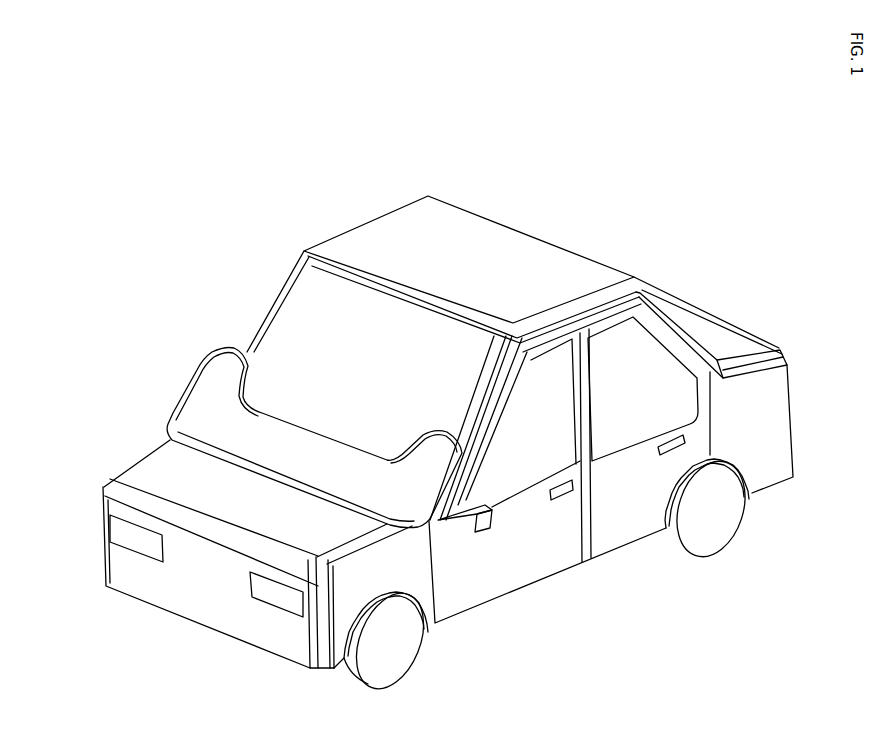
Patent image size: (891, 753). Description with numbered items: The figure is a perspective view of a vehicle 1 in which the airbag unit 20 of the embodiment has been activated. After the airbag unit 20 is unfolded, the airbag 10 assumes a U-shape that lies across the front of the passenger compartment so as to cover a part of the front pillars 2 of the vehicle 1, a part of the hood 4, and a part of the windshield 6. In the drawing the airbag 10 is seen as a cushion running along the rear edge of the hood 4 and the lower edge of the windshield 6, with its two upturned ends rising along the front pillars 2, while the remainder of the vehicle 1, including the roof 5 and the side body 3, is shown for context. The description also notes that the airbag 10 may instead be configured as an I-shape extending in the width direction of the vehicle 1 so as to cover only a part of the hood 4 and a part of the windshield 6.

The vehicle 1 is at (588, 236).
The front pillars 2 is at (488, 395).
The front fender 3 is at (409, 569).
The hood 4 is at (254, 505).
The roof 5 is at (472, 261).
The windshield 6 is at (376, 375).
The airbag 10 is at (310, 464).
The airbag unit 20 is at (178, 384).